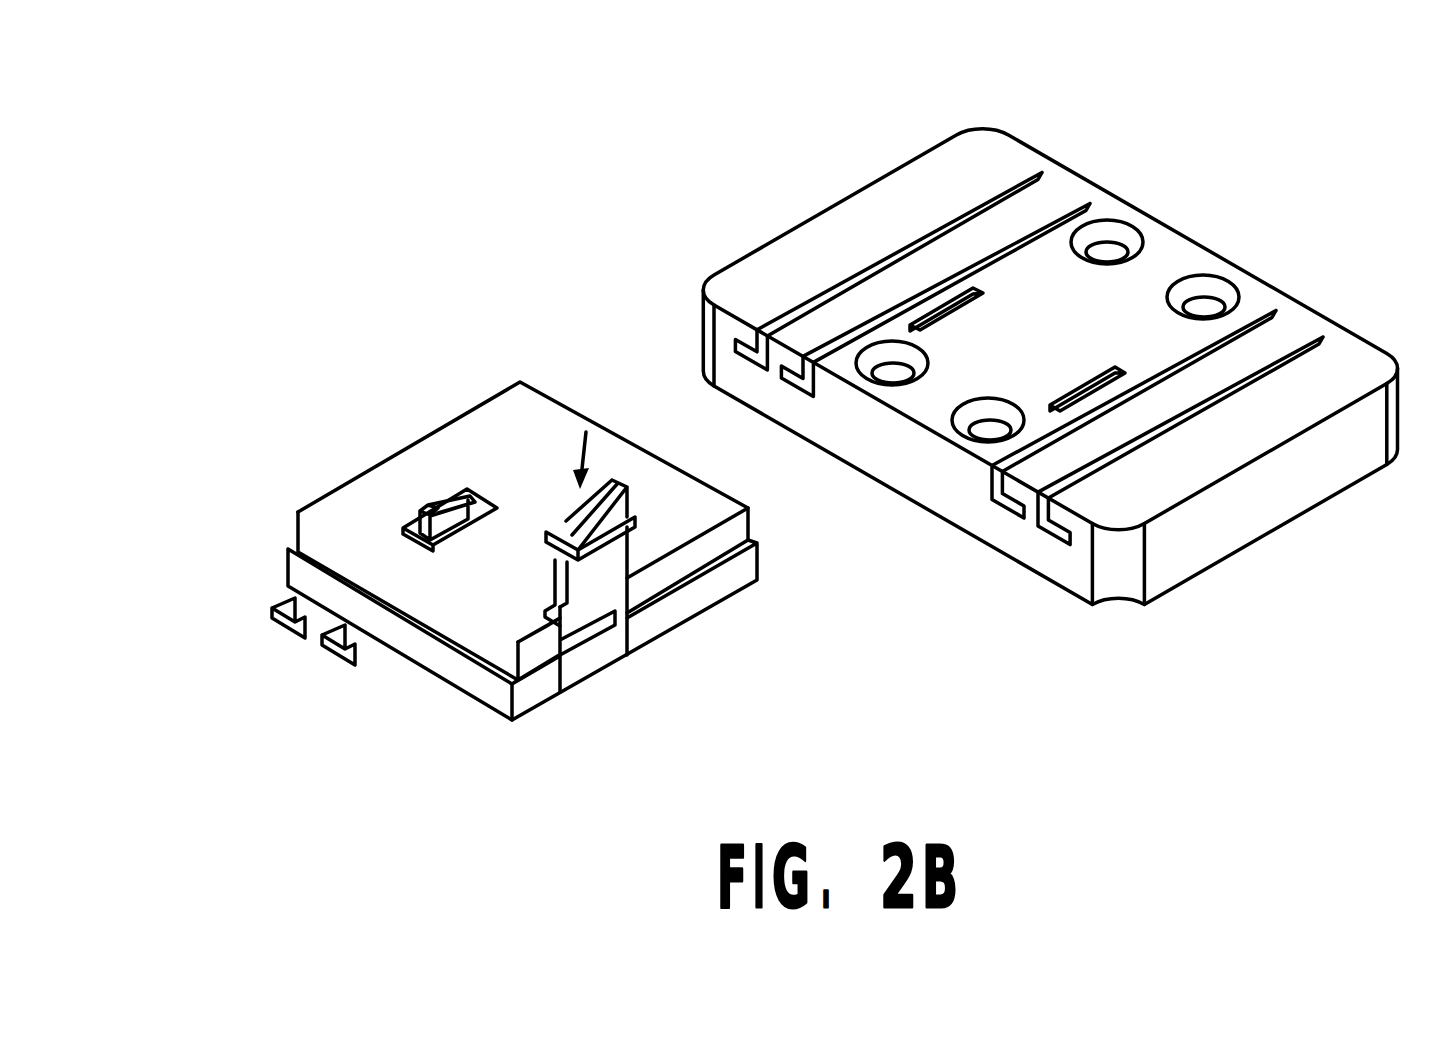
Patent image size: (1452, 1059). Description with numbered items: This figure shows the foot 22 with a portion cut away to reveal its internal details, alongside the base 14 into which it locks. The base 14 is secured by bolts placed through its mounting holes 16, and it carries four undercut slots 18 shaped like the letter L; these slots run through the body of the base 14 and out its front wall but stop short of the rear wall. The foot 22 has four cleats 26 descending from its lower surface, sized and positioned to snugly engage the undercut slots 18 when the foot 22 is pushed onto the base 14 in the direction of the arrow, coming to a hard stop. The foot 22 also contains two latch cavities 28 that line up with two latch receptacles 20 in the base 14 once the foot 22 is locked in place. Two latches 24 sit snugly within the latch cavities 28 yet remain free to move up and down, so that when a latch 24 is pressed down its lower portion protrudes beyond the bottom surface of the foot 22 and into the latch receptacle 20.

The base 14 is at (980, 344).
The mounting holes 16 is at (1000, 422).
The undercut slots 18 is at (800, 380).
The latch receptacles 20 is at (915, 322).
The foot 22 is at (525, 532).
The latches 24 is at (826, 648).
The cleats 26 is at (348, 660).
The latch cavities 28 is at (622, 652).